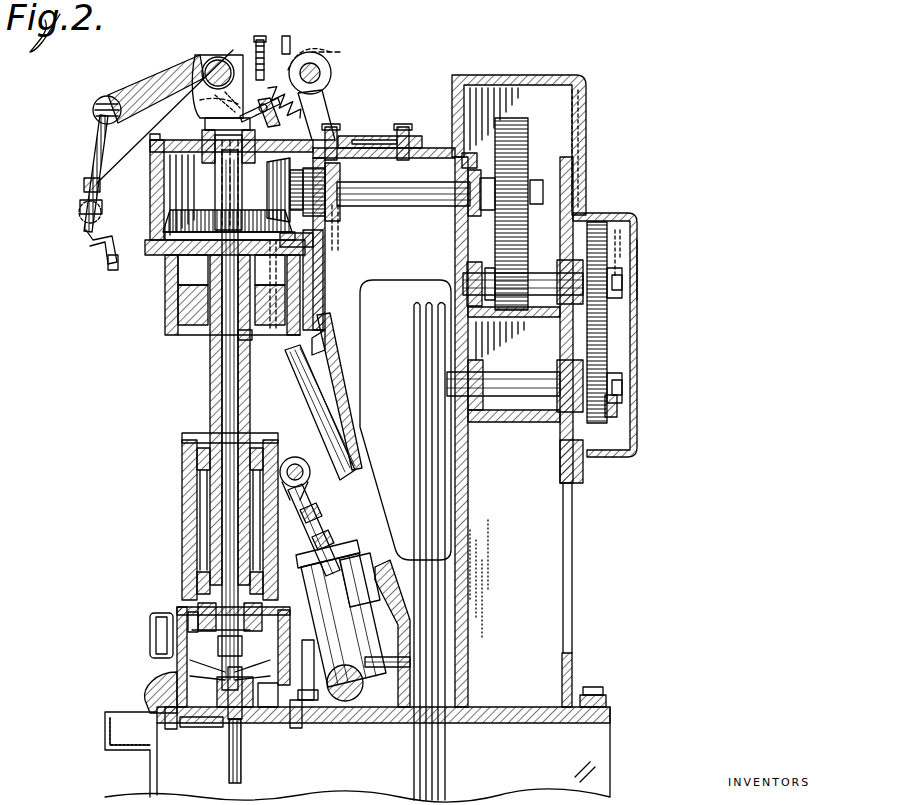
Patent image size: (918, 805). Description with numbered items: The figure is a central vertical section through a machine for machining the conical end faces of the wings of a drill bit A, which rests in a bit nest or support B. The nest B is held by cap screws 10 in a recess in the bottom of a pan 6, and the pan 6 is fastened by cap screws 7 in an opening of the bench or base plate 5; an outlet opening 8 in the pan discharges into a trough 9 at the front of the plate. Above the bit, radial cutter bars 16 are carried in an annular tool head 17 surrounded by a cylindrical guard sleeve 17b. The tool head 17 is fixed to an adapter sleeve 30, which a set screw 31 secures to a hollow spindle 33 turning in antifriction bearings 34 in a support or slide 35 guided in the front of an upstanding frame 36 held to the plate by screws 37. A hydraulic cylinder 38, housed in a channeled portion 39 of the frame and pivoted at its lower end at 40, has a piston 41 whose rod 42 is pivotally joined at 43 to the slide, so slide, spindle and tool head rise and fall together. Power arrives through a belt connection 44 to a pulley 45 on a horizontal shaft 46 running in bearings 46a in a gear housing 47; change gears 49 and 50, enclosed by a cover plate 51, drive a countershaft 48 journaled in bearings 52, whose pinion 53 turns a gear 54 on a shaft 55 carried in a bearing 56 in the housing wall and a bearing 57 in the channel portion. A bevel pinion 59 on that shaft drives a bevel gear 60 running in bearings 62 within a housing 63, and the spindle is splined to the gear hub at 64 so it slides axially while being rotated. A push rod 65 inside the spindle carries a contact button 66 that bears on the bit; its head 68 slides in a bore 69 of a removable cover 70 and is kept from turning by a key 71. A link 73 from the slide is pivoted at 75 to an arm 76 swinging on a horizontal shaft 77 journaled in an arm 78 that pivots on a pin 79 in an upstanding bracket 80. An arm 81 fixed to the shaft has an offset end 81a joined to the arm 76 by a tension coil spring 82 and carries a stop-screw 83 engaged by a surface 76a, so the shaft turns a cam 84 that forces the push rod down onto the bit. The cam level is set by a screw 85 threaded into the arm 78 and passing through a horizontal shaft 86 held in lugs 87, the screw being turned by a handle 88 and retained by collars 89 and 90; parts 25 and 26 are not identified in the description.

The bench or base plate 5 is at (512, 723).
The trough 9 is at (103, 724).
The upstanding frame 36 is at (390, 272).
The belt connection 44 is at (455, 537).
The pulley 45 is at (448, 470).
The gear housing 47 is at (540, 78).
The gear 54 is at (528, 130).
The horizontal shaft 55 is at (380, 205).
The bearing 56 is at (472, 228).
The bearing 57 is at (335, 225).
The bevel pinion 59 is at (300, 190).
The countershaft 48 is at (545, 268).
The bearings 52 is at (465, 282).
The pinion 53 is at (548, 318).
The horizontal shaft 46 is at (515, 398).
The bearings 46a is at (475, 412).
The change gear 49 is at (608, 412).
The change gear 50 is at (608, 212).
The cover plate 51 is at (640, 240).
The removable cover 70 is at (152, 142).
The bevel gear 60 is at (160, 252).
The enlarged cylindrical head 68 is at (205, 160).
The vertical bore 69 is at (248, 172).
The key 71 is at (220, 180).
The pivotal connection 75 is at (220, 113).
The arm 76 is at (333, 128).
The upstanding bracket 80 is at (385, 118).
The cam 84 is at (205, 75).
The horizontal shaft 77 is at (212, 65).
The arm 78 is at (150, 83).
The screw 85 is at (95, 148).
The collar 89 is at (84, 185).
The outstanding lugs 87 is at (80, 207).
The horizontal shaft 86 is at (84, 218).
The collar 90 is at (90, 245).
The operating handle 88 is at (110, 270).
The horizontal pin 79 is at (328, 70).
The arm 81 is at (258, 40).
The adjustable stop-screw 83 is at (286, 36).
The offset free end portion 81a is at (350, 46).
The tension coil spring 82 is at (320, 105).
The surface 76a is at (300, 45).
The link 73 is at (300, 118).
The push rod 65 is at (222, 388).
The hollow cylindrical spindle 33 is at (210, 366).
The bearings 62 is at (172, 308).
The housing 63 is at (170, 270).
The spline 64 is at (240, 337).
The support 35 is at (182, 508).
The antifriction bearings 34 is at (190, 466).
The cutter bars 16 is at (180, 660).
The set screw 31 is at (198, 605).
The cylindrical guard sleeve 17b is at (188, 617).
The contact piece or button 66 is at (190, 628).
The annular tool head 17 is at (150, 634).
The drill bit A is at (178, 648).
The outlet opening 8 is at (145, 688).
The cap screws 7 is at (172, 728).
The pan 6 is at (205, 728).
The cap screws 10 is at (222, 740).
The shaft 26 is at (243, 700).
The shaft 25 is at (242, 775).
The bit nest B is at (275, 705).
The pivotal connection 43 is at (312, 478).
The cylindrical adapter sleeve 30 is at (345, 560).
The hydraulic cylinder 38 is at (380, 597).
The piston rod 42 is at (380, 580).
The piston 41 is at (382, 612).
The channeled portion 39 is at (405, 640).
The pivotal support 40 is at (340, 705).
The screws 37 is at (305, 640).